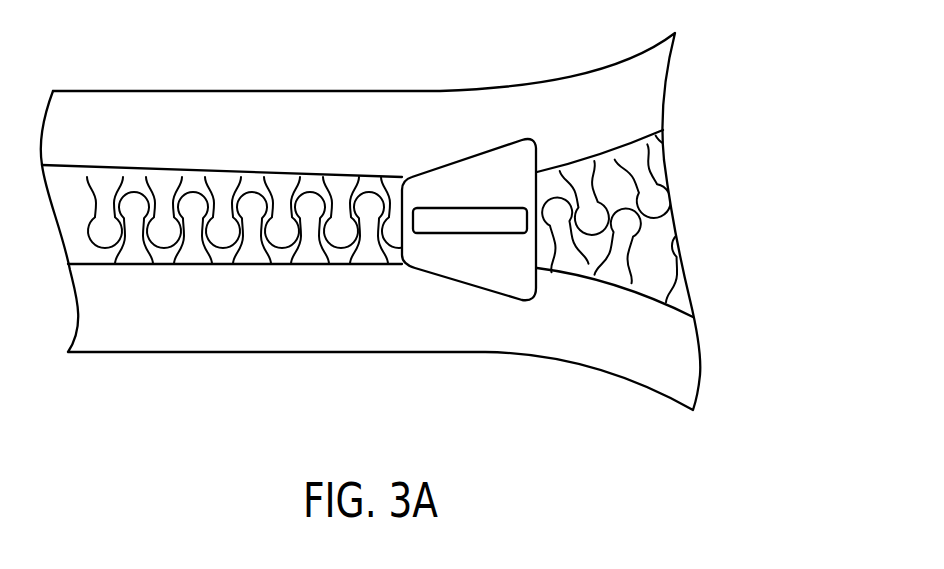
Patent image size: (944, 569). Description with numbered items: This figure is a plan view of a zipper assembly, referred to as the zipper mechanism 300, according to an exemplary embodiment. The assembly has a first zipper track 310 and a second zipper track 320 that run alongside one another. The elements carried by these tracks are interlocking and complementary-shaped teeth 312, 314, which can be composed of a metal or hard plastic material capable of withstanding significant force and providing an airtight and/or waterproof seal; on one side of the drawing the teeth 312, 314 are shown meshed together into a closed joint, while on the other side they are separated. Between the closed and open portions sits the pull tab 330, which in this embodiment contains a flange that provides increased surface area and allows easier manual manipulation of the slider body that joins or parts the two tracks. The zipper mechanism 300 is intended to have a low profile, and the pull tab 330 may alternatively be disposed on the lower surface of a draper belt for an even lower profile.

The zipper mechanism 300 is at (424, 210).
The first zipper track 310 is at (108, 207).
The teeth of the first zipper track 312 is at (658, 188).
The teeth of the second zipper track 314 is at (673, 297).
The second zipper track 320 is at (77, 248).
The pull tab 330 is at (528, 302).